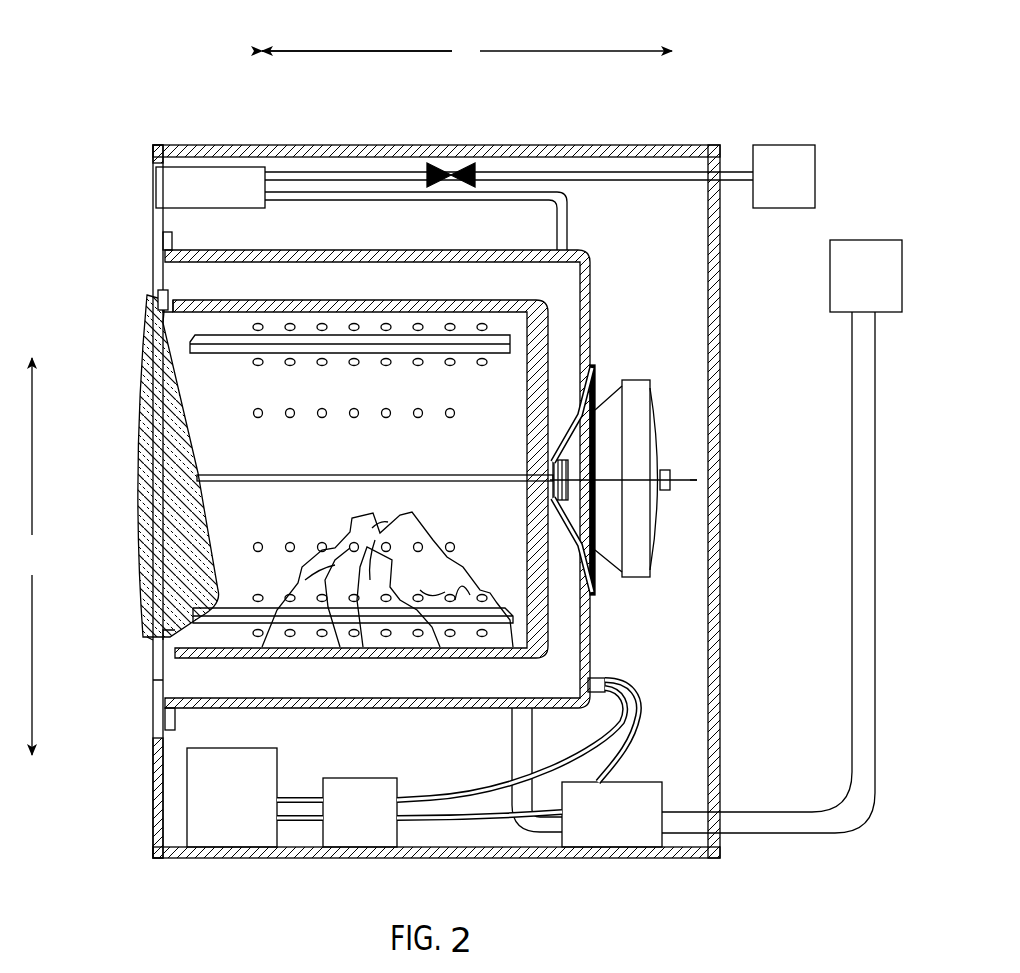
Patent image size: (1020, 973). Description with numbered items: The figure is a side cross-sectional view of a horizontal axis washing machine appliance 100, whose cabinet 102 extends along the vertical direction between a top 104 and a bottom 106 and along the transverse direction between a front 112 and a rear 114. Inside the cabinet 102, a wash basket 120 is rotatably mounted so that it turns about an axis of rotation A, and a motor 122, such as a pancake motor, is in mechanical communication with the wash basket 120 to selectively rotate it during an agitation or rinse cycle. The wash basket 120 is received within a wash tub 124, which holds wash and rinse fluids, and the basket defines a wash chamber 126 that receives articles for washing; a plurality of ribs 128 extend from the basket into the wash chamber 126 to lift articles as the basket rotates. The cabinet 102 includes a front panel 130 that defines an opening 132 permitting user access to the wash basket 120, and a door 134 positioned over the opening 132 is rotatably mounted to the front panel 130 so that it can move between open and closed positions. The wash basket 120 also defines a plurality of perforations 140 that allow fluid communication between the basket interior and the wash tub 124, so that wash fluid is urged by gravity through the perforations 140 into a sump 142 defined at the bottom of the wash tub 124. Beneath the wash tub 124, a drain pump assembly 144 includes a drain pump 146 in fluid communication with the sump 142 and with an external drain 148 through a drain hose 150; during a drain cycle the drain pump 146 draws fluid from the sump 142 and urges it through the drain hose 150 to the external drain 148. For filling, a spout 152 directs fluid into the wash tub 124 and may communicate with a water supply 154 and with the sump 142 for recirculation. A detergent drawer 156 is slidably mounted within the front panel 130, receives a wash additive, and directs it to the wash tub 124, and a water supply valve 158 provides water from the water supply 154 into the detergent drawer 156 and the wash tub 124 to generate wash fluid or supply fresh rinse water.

The washing machine appliance 100 is at (181, 83).
The cabinet 102 is at (720, 487).
The top 104 is at (727, 146).
The bottom 106 is at (748, 851).
The front 112 is at (145, 143).
The rear 114 is at (722, 301).
The wash basket 120 is at (356, 306).
The motor 122 is at (640, 400).
The wash tub 124 is at (591, 322).
The wash chamber 126 is at (222, 432).
The ribs 128 is at (300, 477).
The front panel 130 is at (157, 684).
The opening 132 is at (176, 336).
The door 134 is at (148, 537).
The perforations 140 is at (419, 418).
The sump 142 is at (553, 664).
The drain pump assembly 144 is at (684, 732).
The drain pump 146 is at (631, 830).
The external drain 148 is at (885, 292).
The drain hose 150 is at (852, 614).
The spout 152 is at (568, 226).
The water supply 154 is at (803, 190).
The detergent drawer 156 is at (245, 183).
The water supply valve 158 is at (453, 166).
The axis of rotation A is at (708, 470).